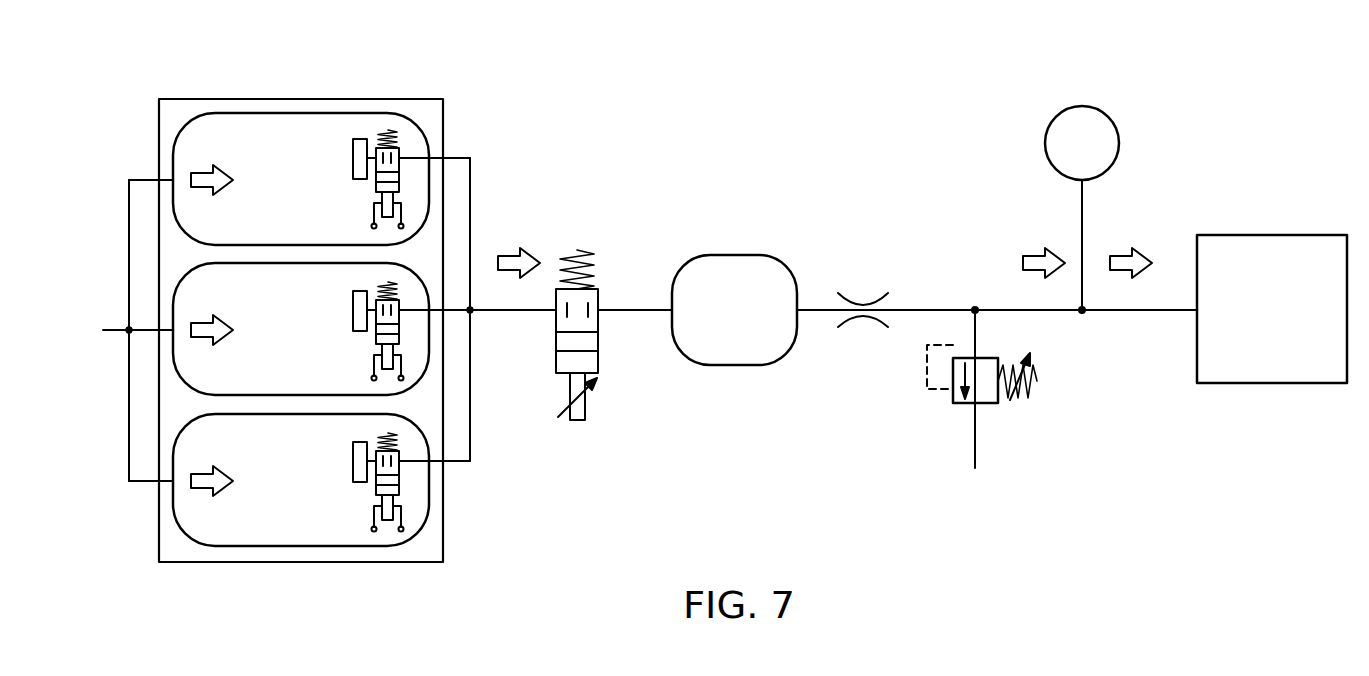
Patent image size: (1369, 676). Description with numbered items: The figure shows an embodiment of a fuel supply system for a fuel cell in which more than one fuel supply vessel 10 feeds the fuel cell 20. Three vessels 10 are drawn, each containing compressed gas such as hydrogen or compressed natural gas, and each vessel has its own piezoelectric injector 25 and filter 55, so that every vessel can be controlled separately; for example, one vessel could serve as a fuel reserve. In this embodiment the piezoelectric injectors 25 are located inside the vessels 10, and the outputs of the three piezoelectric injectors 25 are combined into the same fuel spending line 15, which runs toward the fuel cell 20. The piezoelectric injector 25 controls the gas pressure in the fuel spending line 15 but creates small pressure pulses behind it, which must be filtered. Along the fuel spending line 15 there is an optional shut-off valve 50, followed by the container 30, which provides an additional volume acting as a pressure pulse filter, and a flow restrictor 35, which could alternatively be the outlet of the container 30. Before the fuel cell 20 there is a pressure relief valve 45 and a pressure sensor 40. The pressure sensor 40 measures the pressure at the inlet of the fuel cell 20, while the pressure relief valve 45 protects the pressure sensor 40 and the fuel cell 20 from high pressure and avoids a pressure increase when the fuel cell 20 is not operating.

The vessel 10 is at (255, 297).
The fuel spending line 15 is at (520, 313).
The fuel cell 20 is at (1273, 233).
The piezoelectric injector 25 is at (378, 135).
The container 30 is at (730, 252).
The flow restrictor 35 is at (863, 302).
The pressure sensor 40 is at (1082, 106).
The pressure relief valve 45 is at (975, 310).
The shut-off valve 50 is at (580, 250).
The filter 55 is at (353, 158).